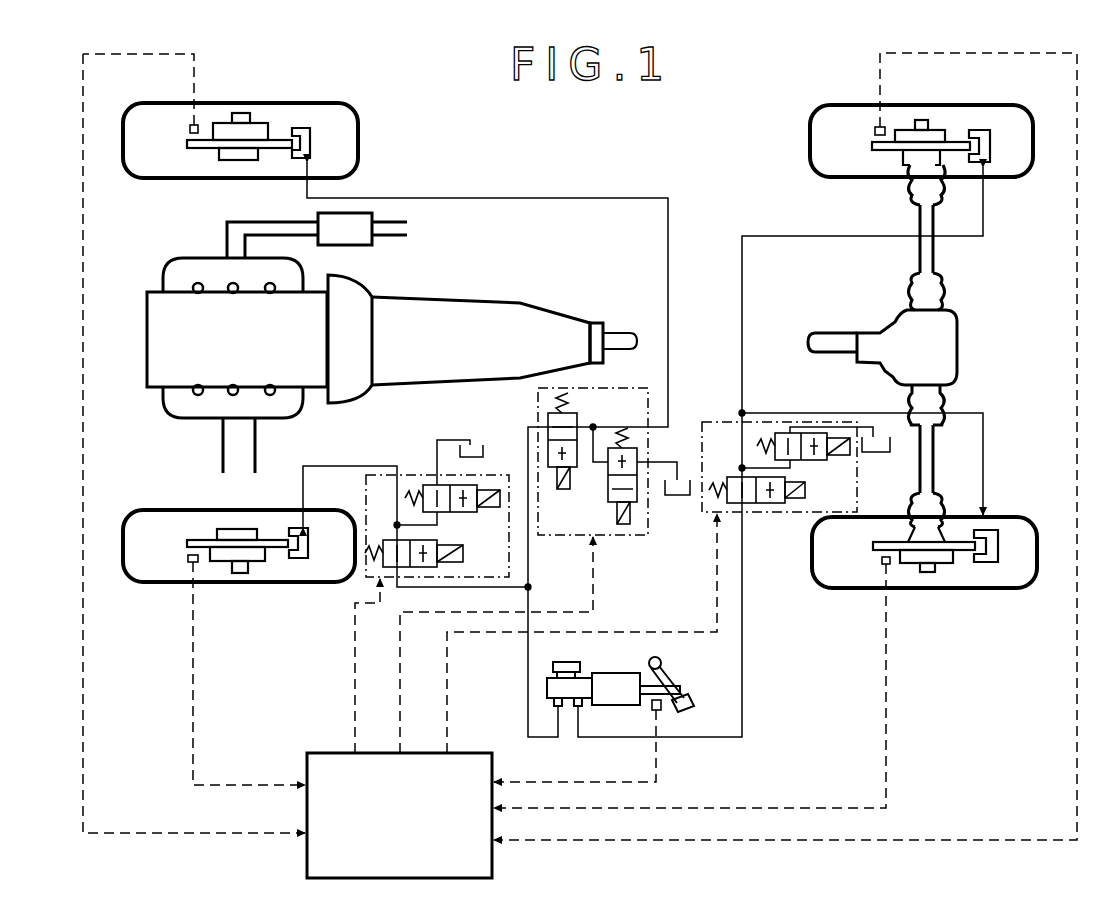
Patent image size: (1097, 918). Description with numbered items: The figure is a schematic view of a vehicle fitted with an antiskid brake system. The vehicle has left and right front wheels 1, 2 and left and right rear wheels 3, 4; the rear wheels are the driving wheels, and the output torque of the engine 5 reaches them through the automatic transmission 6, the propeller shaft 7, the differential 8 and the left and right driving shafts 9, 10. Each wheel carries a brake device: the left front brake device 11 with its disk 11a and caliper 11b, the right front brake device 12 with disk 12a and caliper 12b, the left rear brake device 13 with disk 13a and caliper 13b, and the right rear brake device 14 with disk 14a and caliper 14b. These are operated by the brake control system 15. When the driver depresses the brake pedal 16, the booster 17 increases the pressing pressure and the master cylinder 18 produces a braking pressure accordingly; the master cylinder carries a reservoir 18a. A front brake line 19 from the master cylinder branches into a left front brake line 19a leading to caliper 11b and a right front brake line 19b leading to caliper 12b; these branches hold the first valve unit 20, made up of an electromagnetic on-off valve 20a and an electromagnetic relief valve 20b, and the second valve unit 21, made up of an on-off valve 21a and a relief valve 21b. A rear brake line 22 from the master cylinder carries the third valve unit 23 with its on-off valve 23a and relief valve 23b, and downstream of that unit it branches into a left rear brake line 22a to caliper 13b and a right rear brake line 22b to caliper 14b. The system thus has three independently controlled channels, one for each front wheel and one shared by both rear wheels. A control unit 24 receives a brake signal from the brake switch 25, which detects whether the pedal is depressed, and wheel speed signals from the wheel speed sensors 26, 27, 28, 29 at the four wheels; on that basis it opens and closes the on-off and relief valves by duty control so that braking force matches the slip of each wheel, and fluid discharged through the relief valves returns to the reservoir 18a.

The left front wheel 1 is at (143, 565).
The right front wheel 2 is at (358, 113).
The left rear wheel 3 is at (833, 580).
The right rear wheel 4 is at (1015, 105).
The engine 5 is at (162, 310).
The automatic transmission 6 is at (462, 325).
The propeller shaft 7 is at (835, 340).
The differential 8 is at (948, 350).
The left driving shaft 9 is at (933, 470).
The right driving shaft 10 is at (935, 262).
The left front brake device 11 is at (278, 526).
The disk 11a is at (273, 560).
The caliper 11b is at (305, 565).
The right front brake device 12 is at (280, 125).
The disk 12a is at (272, 148).
The caliper 12b is at (315, 130).
The left rear brake device 13 is at (961, 560).
The disk 13a is at (945, 555).
The caliper 13b is at (1000, 565).
The right rear brake device 14 is at (955, 157).
The disk 14a is at (888, 150).
The caliper 14b is at (990, 130).
The brake control system 15 is at (763, 635).
The brake pedal 16 is at (680, 700).
The booster 17 is at (620, 685).
The master cylinder 18 is at (545, 679).
The reservoir 18a is at (580, 665).
The front brake line 19 is at (525, 690).
The left front brake line 19a is at (357, 466).
The right front brake line 19b is at (605, 198).
The first valve unit 20 is at (473, 486).
The electromagnetic on-off valve 20a is at (447, 540).
The electromagnetic relief valve 20b is at (465, 485).
The second valve unit 21 is at (614, 477).
The electromagnetic on-off valve 21a is at (578, 425).
The electromagnetic relief valve 21b is at (608, 490).
The rear brake line 22 is at (743, 612).
The left rear brake line 22a is at (985, 420).
The right rear brake line 22b is at (985, 236).
The third valve unit 23 is at (808, 467).
The electromagnetic on-off valve 23a is at (772, 483).
The electromagnetic relief valve 23b is at (805, 445).
The control unit 24 is at (308, 755).
The brake switch 25 is at (660, 712).
The wheel speed sensor 26 is at (188, 560).
The wheel speed sensor 27 is at (193, 125).
The wheel speed sensor 28 is at (883, 562).
The wheel speed sensor 29 is at (876, 130).